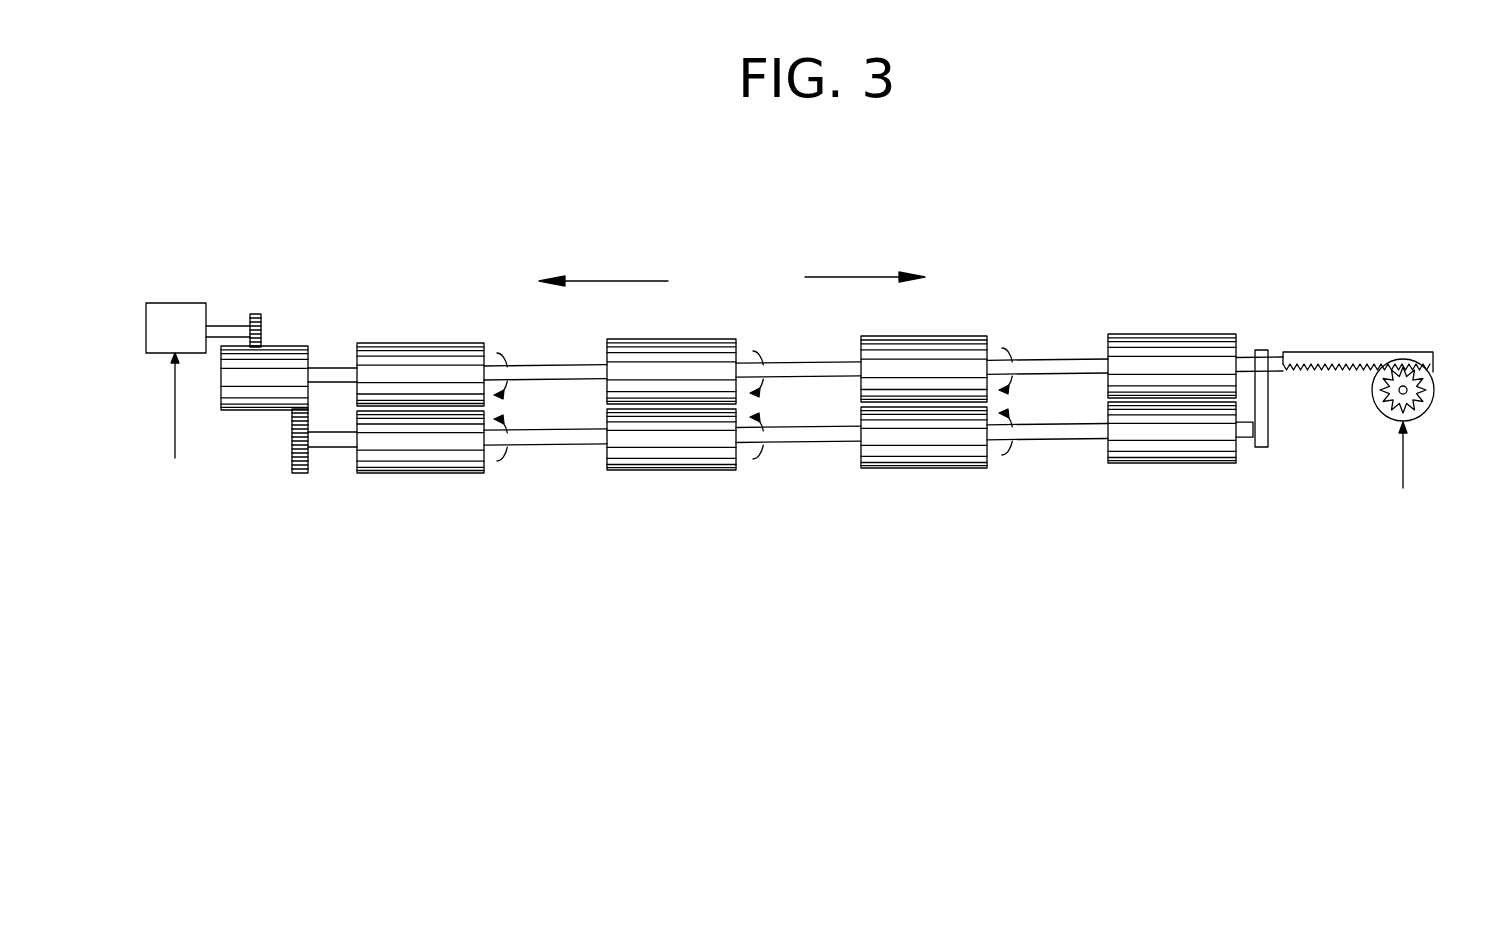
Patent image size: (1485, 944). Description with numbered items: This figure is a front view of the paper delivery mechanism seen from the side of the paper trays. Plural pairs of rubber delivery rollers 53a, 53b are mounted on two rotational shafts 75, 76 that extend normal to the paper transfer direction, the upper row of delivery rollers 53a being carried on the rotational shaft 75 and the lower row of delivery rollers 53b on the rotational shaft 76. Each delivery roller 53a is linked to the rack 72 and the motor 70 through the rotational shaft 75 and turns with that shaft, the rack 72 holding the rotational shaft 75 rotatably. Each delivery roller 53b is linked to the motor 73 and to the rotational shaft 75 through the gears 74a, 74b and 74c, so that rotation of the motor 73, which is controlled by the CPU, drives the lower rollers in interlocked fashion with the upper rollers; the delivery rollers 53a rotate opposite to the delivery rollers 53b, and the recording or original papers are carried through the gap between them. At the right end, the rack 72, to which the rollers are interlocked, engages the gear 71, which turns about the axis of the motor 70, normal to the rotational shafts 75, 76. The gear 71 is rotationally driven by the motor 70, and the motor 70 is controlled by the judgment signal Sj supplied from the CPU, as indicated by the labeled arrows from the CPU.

The motor 73 is at (173, 303).
The gear 74c is at (258, 314).
The gear 74a is at (297, 346).
The gear 74b is at (300, 473).
The delivery roller 53a is at (423, 343).
The delivery roller 53b is at (440, 473).
The rotational shaft 75 is at (1245, 357).
The rotational shaft 76 is at (1243, 438).
The rack 72 is at (1342, 352).
The gear 71 is at (1428, 395).
The motor 70 is at (1375, 412).
The judgment signal Sj is at (1408, 458).